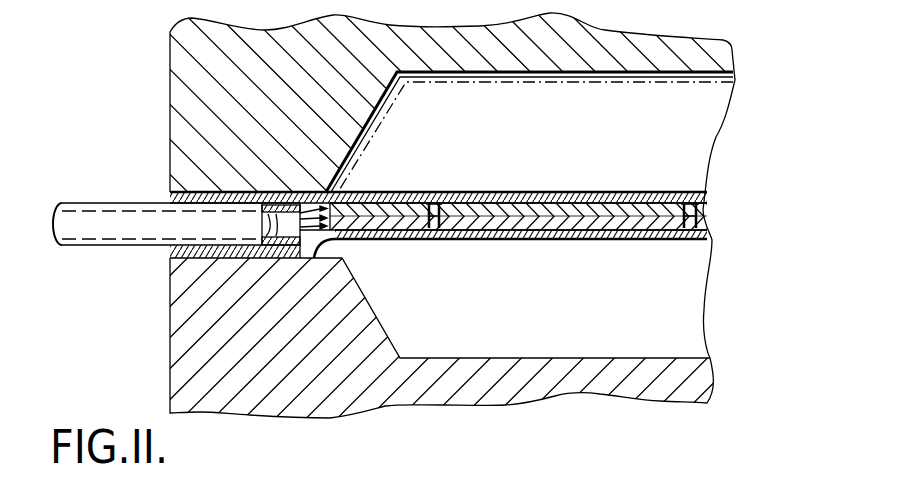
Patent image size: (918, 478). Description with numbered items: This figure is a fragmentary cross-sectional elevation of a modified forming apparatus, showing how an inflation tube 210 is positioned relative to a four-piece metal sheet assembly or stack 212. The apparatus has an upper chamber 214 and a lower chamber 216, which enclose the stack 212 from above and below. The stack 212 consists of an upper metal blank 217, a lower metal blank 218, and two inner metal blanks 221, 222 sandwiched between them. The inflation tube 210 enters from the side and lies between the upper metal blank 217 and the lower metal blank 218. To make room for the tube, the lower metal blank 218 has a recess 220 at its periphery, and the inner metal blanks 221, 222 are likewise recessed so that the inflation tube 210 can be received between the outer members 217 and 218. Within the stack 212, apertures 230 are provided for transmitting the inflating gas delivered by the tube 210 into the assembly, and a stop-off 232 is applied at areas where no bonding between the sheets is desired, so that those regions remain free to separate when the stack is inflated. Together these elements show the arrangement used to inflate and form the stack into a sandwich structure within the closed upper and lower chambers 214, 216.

The inflation tube 210 is at (100, 172).
The four-piece metal sheet assembly 212 is at (720, 214).
The upper chamber 214 is at (712, 118).
The lower chamber 216 is at (690, 338).
The upper metal blank 217 is at (387, 192).
The lower metal blank 218 is at (384, 240).
The recess 220 is at (317, 258).
The inner metal blank 221 is at (514, 202).
The inner metal blank 222 is at (578, 240).
The apertures 230 is at (452, 240).
The stop-off 232 is at (691, 200).